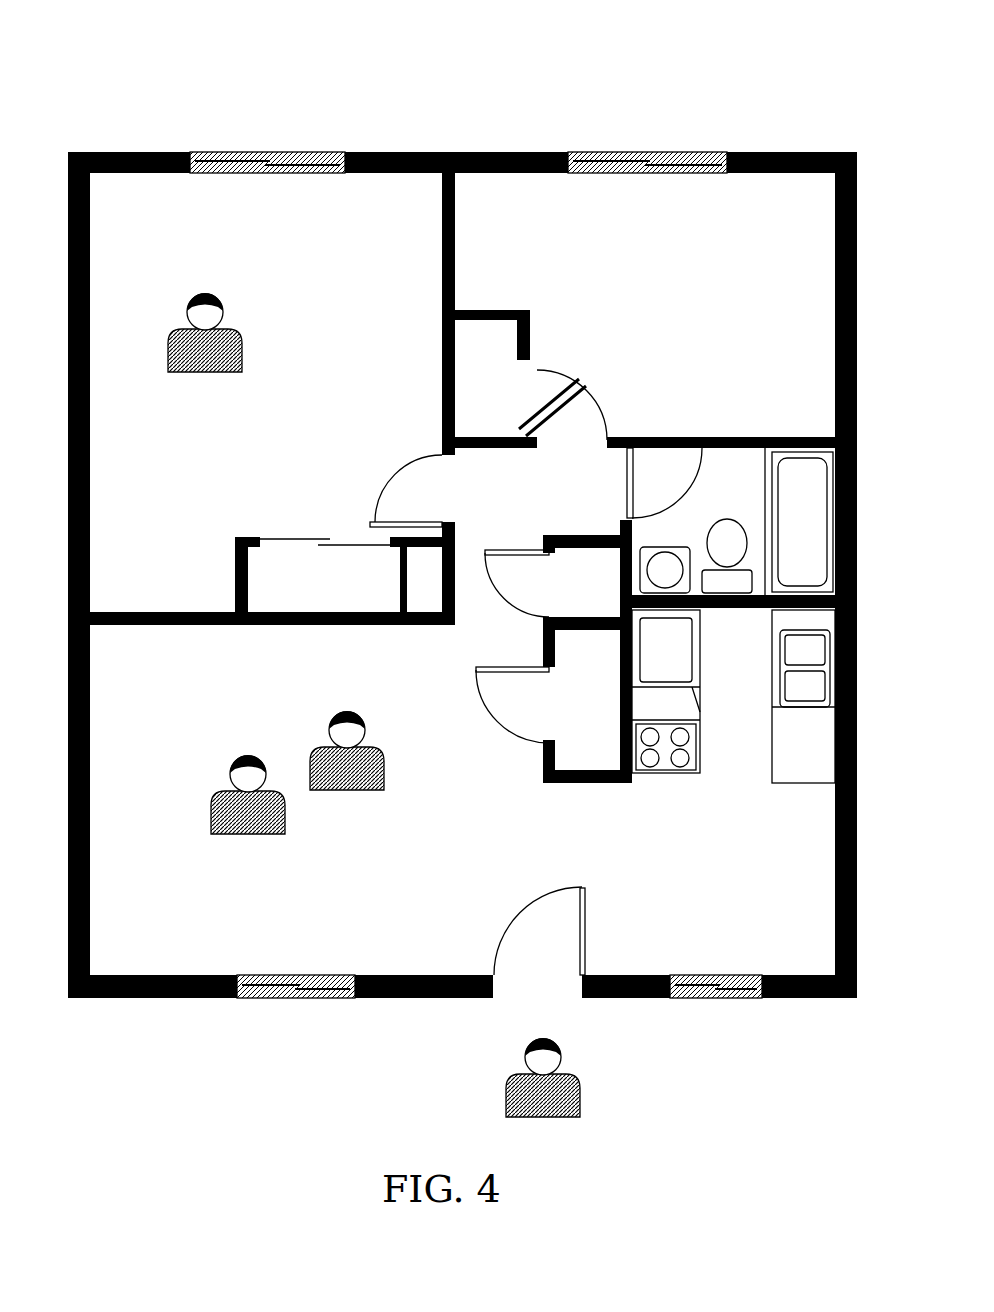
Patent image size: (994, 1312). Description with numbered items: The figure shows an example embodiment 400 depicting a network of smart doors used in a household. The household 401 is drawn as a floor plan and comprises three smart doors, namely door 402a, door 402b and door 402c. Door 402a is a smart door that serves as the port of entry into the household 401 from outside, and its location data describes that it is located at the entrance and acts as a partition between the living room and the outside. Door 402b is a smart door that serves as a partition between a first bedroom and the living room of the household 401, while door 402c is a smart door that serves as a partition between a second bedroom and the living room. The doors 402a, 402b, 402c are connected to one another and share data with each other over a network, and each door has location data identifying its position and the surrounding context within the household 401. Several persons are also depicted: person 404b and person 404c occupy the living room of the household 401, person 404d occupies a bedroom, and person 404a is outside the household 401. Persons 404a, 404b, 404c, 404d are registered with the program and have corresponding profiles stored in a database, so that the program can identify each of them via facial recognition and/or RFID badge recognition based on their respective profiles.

The example embodiment 400 is at (477, 103).
The household 401 is at (774, 141).
The door 402a is at (596, 891).
The door 402b is at (610, 386).
The door 402c is at (388, 468).
The person 404a is at (598, 1103).
The person 404b is at (247, 849).
The person 404c is at (359, 797).
The person 404d is at (240, 323).